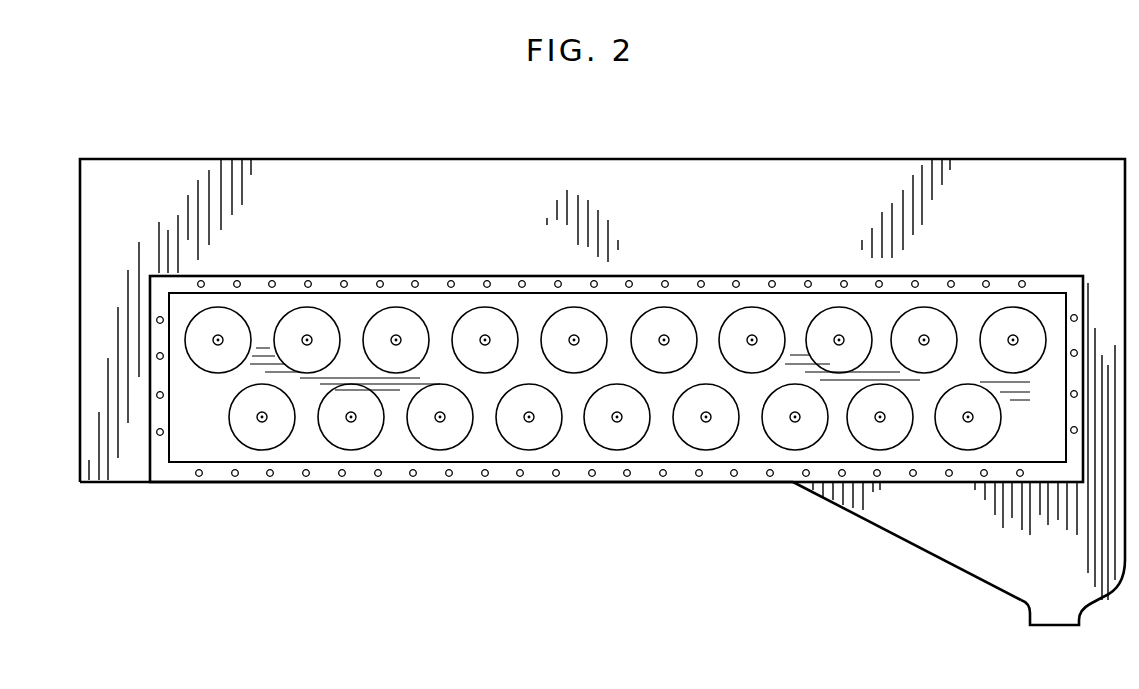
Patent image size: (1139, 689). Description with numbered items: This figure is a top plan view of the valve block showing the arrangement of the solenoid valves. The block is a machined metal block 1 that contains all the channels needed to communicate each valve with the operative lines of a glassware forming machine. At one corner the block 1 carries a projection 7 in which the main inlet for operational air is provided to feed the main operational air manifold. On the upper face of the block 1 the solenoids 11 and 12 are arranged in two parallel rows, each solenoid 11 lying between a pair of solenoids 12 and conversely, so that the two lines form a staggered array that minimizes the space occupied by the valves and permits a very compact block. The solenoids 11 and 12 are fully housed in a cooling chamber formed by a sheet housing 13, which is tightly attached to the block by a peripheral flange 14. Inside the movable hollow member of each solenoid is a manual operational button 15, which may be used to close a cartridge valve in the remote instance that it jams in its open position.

The metal block 1 is at (577, 172).
The projection 7 is at (887, 523).
The solenoids 11 is at (241, 318).
The solenoids 12 is at (366, 438).
The sheet housing 13 is at (355, 301).
The peripheral flange 14 is at (465, 284).
The manual operational buttons 15 is at (480, 343).